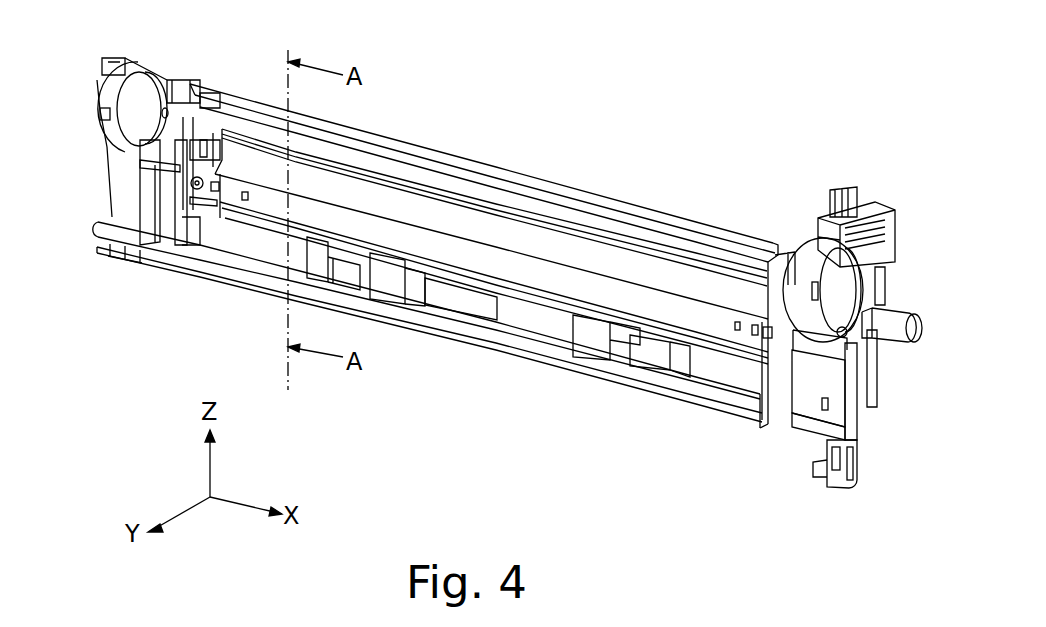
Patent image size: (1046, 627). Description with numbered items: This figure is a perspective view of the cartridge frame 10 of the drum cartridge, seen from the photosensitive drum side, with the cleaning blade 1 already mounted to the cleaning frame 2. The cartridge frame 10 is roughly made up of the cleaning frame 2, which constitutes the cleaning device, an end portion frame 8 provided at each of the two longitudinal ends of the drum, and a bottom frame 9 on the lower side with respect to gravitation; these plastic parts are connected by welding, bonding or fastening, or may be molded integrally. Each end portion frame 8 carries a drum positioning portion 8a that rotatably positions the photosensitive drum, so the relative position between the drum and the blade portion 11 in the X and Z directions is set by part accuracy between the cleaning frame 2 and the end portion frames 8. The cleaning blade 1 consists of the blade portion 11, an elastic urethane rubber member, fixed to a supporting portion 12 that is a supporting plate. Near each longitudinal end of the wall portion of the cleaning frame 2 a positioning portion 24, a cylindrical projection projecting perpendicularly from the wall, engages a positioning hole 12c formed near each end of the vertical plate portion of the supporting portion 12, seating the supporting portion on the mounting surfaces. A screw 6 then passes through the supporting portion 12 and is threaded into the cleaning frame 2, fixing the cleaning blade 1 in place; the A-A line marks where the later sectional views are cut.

The cleaning blade 1 is at (639, 244).
The cleaning frame 2 is at (485, 164).
The screw 6 is at (170, 250).
The end portion frame 8 is at (150, 72).
The drum positioning portion 8a is at (120, 115).
The bottom frame 9 is at (552, 353).
The cartridge frame 10 is at (587, 186).
The blade portion 11 is at (402, 203).
The supporting portion 12 is at (508, 270).
The positioning hole 12c is at (238, 203).
The positioning portion 24 is at (215, 181).